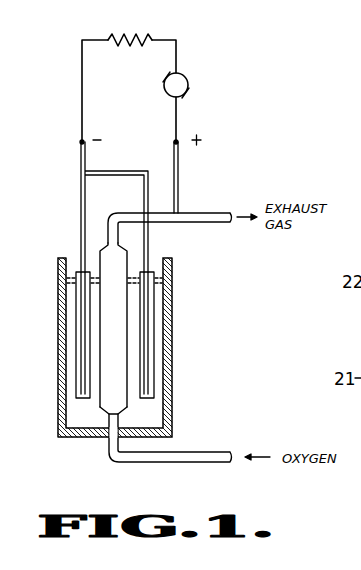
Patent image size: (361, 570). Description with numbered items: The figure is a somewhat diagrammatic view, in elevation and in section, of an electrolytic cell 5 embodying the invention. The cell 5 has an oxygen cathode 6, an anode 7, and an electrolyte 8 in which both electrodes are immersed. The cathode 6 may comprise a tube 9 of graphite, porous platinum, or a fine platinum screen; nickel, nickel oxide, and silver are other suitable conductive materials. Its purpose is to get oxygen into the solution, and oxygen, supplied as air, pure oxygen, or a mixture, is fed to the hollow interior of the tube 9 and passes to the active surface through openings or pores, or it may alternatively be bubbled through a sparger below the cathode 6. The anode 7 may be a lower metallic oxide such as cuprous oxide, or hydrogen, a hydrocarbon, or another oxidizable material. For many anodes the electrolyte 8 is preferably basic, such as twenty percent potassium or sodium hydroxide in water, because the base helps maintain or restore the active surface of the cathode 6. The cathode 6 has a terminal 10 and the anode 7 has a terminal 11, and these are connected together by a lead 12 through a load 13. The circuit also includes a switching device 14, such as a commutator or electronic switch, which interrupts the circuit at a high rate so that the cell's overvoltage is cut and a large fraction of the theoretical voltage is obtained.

The cell 5 is at (172, 311).
The oxygen cathode 6 is at (119, 321).
The anode 7 is at (80, 336).
The electrolyte 8 is at (75, 412).
The tube 9 is at (113, 398).
The terminal 10 is at (178, 143).
The terminal 11 is at (81, 143).
The lead 12 is at (177, 40).
The load 13 is at (122, 39).
The switching device 14 is at (189, 87).